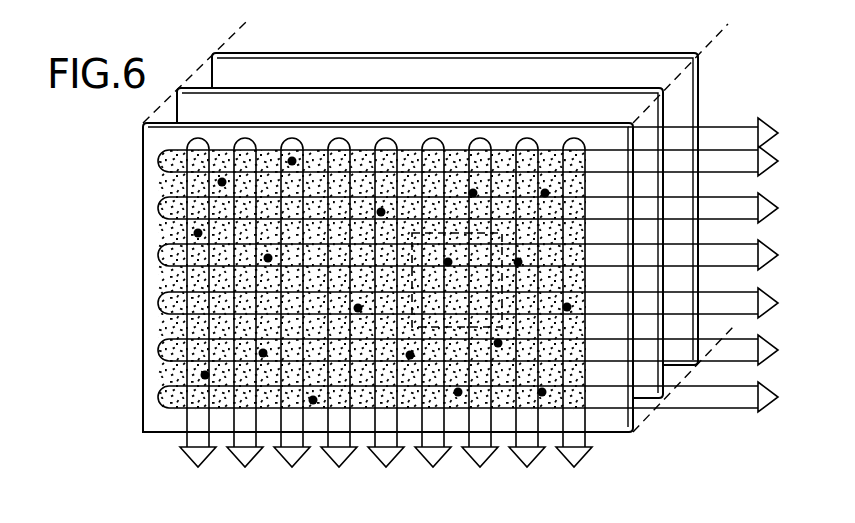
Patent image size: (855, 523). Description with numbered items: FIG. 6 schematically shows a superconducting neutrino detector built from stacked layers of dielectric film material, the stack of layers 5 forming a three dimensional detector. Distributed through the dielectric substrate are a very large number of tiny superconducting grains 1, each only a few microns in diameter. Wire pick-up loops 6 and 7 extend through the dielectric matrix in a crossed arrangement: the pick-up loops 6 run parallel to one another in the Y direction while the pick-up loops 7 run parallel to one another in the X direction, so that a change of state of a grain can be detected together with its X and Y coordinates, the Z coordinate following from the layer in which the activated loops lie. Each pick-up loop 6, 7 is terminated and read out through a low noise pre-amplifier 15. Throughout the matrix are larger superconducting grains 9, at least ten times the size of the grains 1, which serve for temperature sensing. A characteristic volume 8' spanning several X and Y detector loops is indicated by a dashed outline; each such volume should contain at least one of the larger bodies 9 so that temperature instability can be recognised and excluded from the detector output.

The superconducting grains 1 is at (175, 302).
The substrate plates 5 is at (640, 137).
The pick-up loops 6 is at (295, 138).
The pick-up loops 7 is at (711, 148).
The characteristic volume 8' is at (464, 212).
The larger superconducting grains 9 is at (205, 375).
The low noise pre-amplifier 15 is at (779, 164).